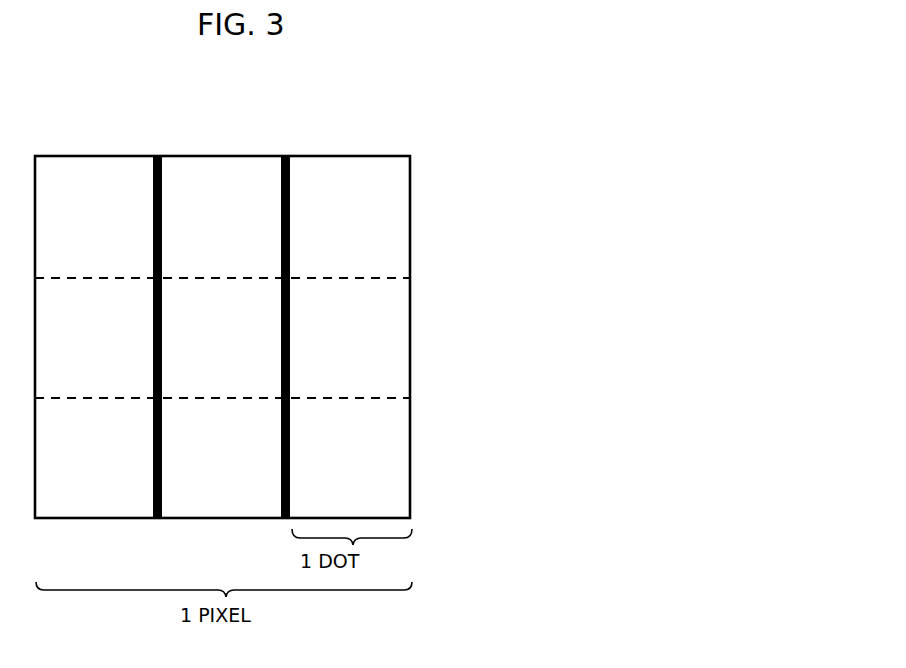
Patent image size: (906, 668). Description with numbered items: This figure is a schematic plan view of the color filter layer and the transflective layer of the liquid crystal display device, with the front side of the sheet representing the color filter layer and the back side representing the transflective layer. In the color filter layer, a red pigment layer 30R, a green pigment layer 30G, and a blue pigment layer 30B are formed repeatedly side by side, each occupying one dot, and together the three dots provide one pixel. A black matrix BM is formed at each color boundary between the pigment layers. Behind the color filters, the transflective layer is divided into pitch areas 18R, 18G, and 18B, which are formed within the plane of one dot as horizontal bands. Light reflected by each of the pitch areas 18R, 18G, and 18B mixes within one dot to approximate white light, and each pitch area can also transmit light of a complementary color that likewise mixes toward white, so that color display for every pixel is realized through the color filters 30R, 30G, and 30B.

The R (red) pigment layer 30R is at (89, 146).
The G (green) pigment layer 30G is at (221, 142).
The B (blue) pigment layer 30B is at (353, 142).
The black matrix BM is at (157, 143).
The pitch area 18R is at (425, 213).
The pitch area 18G is at (425, 334).
The pitch area 18B is at (425, 454).